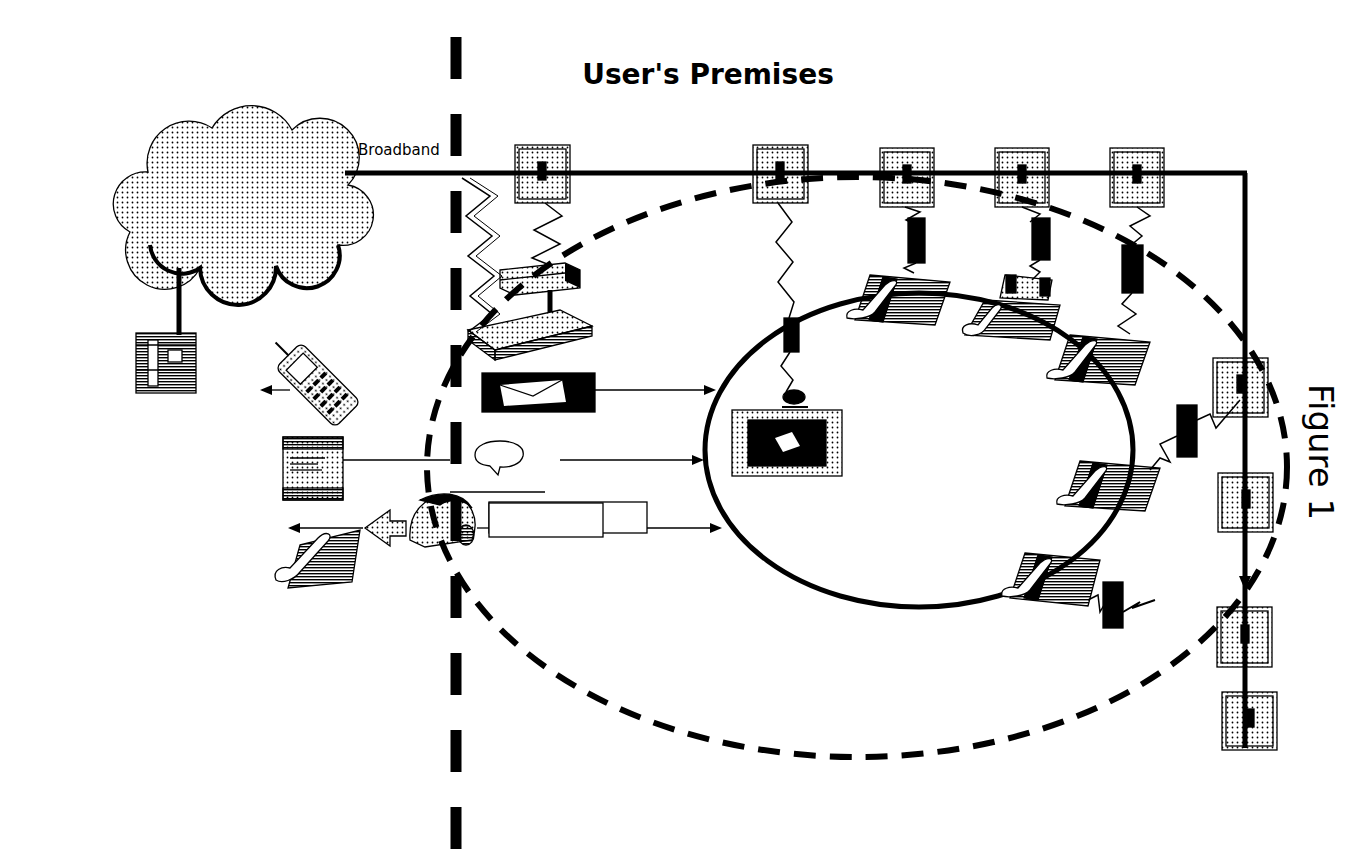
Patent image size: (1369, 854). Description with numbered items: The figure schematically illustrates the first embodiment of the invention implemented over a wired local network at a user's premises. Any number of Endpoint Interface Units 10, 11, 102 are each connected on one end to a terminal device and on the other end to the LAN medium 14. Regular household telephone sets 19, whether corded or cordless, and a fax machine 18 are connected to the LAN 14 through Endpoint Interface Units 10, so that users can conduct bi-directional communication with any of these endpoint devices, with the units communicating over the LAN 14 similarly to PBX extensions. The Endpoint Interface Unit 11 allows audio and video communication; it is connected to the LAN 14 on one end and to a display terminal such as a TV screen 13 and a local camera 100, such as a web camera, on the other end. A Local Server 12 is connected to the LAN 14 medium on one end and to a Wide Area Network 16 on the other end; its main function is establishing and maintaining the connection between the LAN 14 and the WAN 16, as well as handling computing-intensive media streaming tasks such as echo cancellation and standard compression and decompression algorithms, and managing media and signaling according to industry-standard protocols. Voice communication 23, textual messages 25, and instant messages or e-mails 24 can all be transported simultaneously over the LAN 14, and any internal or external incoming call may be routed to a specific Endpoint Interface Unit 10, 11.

The Endpoint Interface Unit 10 is at (1054, 347).
The Endpoint Interface Unit 11 is at (802, 277).
The Local Server 12 is at (535, 269).
The TV screen 13 is at (787, 460).
The LAN 14 is at (811, 447).
The Wide Area Network 16 is at (243, 249).
The fax machine 18 is at (1011, 315).
The telephone set 19 is at (1003, 440).
The voice communication 23 is at (498, 541).
The instant messages or e-mails 24 is at (493, 468).
The textual messages 25 is at (488, 379).
The local camera 100 is at (814, 379).
The Endpoint Interface Unit 102 is at (1121, 618).